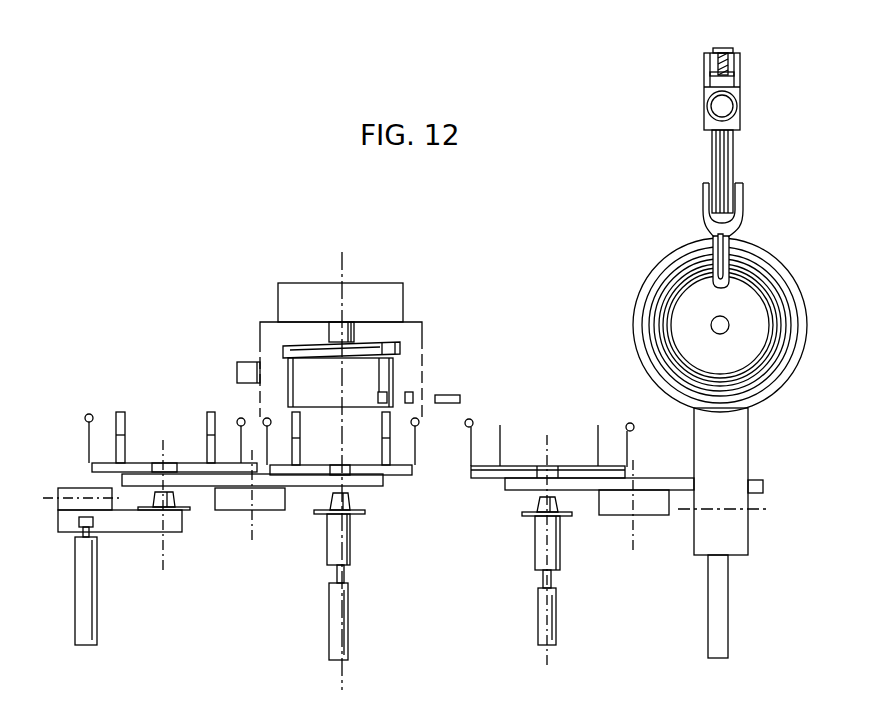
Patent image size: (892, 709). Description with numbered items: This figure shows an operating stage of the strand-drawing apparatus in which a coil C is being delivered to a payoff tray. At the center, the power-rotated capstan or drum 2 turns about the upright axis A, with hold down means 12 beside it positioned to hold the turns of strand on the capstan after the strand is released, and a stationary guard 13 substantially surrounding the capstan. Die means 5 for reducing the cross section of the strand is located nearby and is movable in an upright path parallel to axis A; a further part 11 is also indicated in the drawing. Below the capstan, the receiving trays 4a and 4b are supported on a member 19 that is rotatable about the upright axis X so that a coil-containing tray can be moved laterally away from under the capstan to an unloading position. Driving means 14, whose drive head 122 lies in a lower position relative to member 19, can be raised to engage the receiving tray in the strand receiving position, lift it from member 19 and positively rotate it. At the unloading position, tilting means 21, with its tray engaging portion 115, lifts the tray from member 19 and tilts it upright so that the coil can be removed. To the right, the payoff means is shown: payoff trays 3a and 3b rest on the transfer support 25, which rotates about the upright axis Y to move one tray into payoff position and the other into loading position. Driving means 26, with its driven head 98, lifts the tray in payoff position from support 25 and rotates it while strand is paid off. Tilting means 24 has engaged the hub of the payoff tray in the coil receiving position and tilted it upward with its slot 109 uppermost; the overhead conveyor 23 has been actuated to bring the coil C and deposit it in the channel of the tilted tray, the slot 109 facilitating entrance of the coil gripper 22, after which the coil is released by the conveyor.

The capstan or drum 2 is at (393, 370).
The payoff tray 3a is at (776, 388).
The payoff tray 3b is at (627, 455).
The receiving tray 4a is at (412, 470).
The receiving tray 4b is at (92, 465).
The die means 5 is at (460, 396).
The bar 11 is at (400, 348).
The hold down means 12 is at (237, 370).
The stationary guard 13 is at (422, 332).
The driving means 14 is at (350, 556).
The member 19 is at (198, 478).
The tilting means 21 is at (122, 527).
The coil gripper 22 is at (743, 212).
The overhead conveyor 23 is at (733, 50).
The tilting means 24 is at (748, 452).
The transfer support 25 is at (763, 486).
The driving means 26 is at (538, 560).
The driven head 98 is at (537, 503).
The slot 109 is at (713, 242).
The tray engaging portion 115 is at (178, 498).
The drive head 122 is at (352, 500).
The axis A is at (346, 276).
The coil C is at (780, 305).
The axis X is at (164, 553).
The axis Y is at (550, 456).